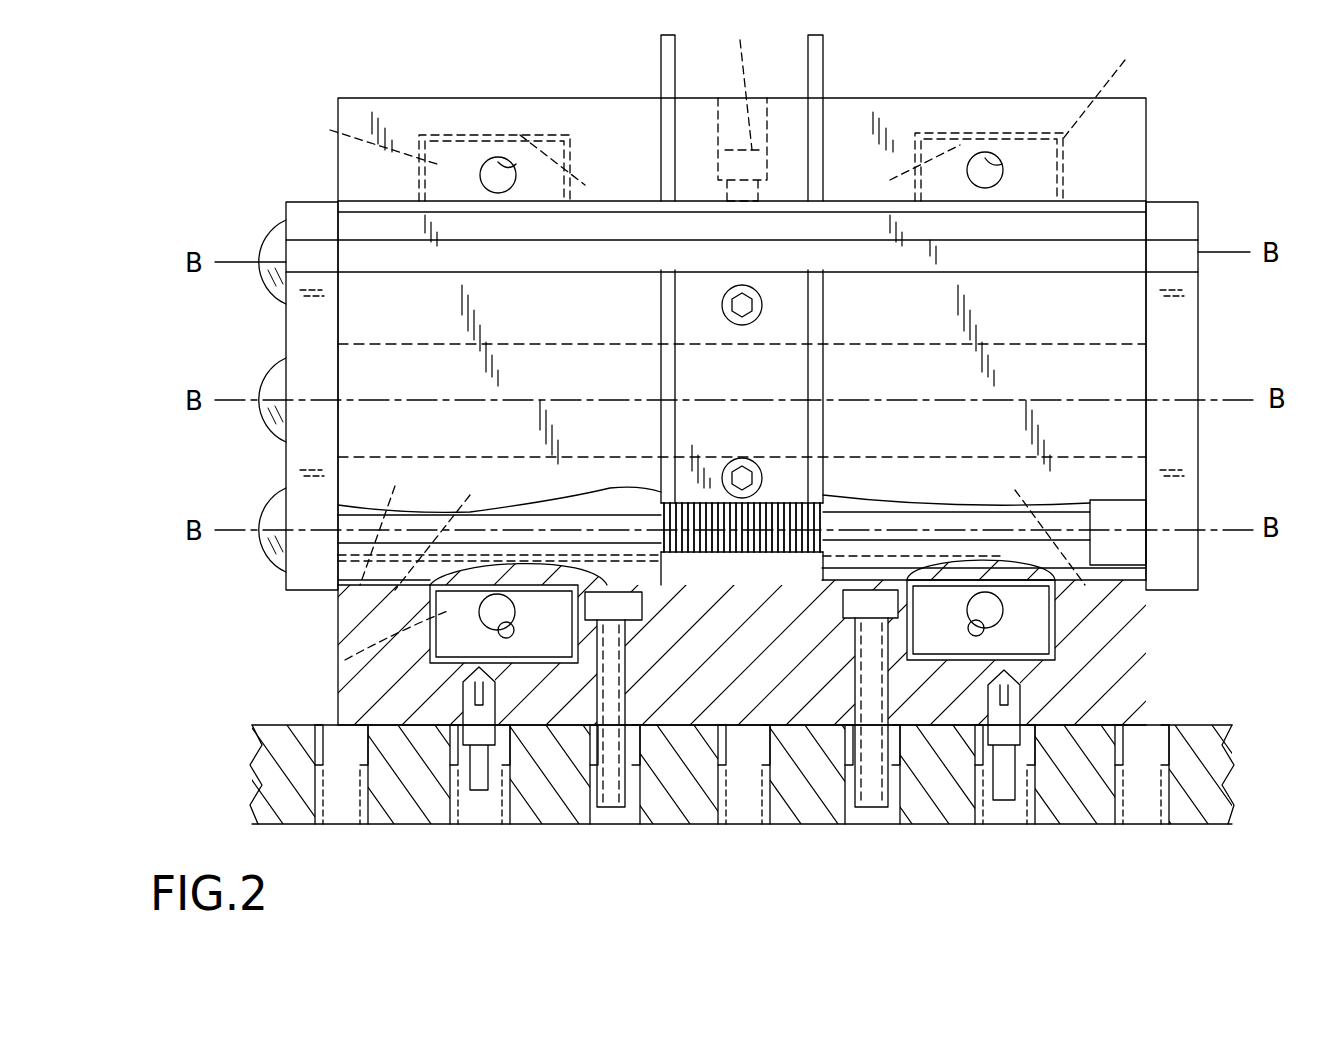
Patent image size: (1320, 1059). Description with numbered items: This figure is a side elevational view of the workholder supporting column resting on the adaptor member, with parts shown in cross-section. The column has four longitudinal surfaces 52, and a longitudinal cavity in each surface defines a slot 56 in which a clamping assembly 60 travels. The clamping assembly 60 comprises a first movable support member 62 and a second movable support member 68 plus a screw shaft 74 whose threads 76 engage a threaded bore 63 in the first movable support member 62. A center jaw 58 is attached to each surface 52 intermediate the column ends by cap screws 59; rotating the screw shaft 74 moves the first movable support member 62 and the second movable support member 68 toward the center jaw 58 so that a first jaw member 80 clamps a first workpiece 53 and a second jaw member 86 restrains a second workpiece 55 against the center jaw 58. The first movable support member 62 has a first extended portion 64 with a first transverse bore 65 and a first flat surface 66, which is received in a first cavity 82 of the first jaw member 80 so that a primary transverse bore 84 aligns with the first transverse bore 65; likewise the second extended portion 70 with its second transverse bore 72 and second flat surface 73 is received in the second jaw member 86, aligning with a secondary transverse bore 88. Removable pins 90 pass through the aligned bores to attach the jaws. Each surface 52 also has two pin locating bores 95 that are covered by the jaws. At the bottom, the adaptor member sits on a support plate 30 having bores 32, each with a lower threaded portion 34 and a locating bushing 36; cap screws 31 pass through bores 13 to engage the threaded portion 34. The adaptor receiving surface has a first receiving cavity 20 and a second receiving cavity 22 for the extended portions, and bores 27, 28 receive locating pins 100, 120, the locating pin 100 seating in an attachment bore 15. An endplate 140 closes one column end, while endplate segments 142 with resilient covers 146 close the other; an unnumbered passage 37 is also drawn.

The bore 13 is at (625, 662).
The attachment bore 15 is at (497, 672).
The first receiving cavity 20 is at (430, 640).
The second receiving cavity 22 is at (1070, 680).
The bore 27 is at (366, 646).
The bore 28 is at (1065, 622).
The support plate 30 is at (1240, 750).
The cap screw 31 is at (870, 795).
The bore 32 is at (360, 782).
The lower threaded portion 34 is at (345, 818).
The locating bushing 36 is at (300, 820).
The passage 37 is at (901, 169).
The longitudinal surface 52 is at (338, 198).
The first workpiece 53 is at (661, 62).
The second workpiece 55 is at (823, 55).
The slot 56 is at (1146, 344).
The center jaw 58 is at (806, 143).
The cap screw 59 is at (762, 478).
The clamping assembly 60 is at (378, 598).
The first movable support member 62 is at (300, 637).
The threaded bore 63 is at (714, 524).
The first extended portion 64 is at (330, 742).
The first transverse bore 65 is at (585, 790).
The first flat surface 66 is at (440, 660).
The second movable support member 68 is at (1210, 600).
The second extended portion 70 is at (1100, 660).
The second transverse bore 72 is at (920, 690).
The second flat surface 73 is at (985, 632).
The screw shaft 74 is at (728, 556).
The threads 76 is at (830, 500).
The first jaw member 80 is at (634, 155).
The first cavity 82 is at (576, 166).
The primary transverse bore 84 is at (498, 157).
The second jaw member 86 is at (1127, 145).
The secondary transverse bore 88 is at (990, 160).
The removable pin 90 is at (482, 178).
The pin locating bore 95 is at (740, 530).
The locating pin 100 is at (480, 745).
The locating pin 120 is at (1025, 740).
The endplate 140 is at (1190, 468).
The endplate segment 142 is at (336, 371).
The resilient cover 146 is at (268, 250).